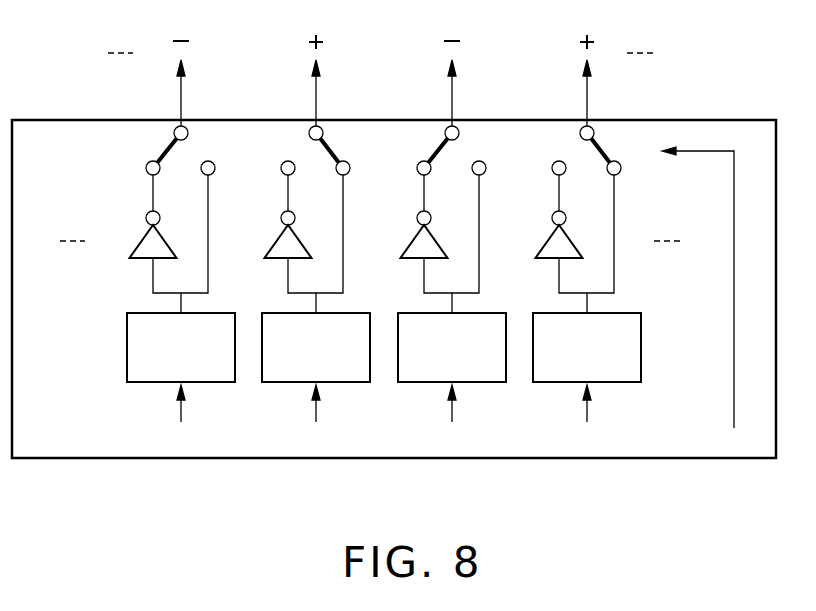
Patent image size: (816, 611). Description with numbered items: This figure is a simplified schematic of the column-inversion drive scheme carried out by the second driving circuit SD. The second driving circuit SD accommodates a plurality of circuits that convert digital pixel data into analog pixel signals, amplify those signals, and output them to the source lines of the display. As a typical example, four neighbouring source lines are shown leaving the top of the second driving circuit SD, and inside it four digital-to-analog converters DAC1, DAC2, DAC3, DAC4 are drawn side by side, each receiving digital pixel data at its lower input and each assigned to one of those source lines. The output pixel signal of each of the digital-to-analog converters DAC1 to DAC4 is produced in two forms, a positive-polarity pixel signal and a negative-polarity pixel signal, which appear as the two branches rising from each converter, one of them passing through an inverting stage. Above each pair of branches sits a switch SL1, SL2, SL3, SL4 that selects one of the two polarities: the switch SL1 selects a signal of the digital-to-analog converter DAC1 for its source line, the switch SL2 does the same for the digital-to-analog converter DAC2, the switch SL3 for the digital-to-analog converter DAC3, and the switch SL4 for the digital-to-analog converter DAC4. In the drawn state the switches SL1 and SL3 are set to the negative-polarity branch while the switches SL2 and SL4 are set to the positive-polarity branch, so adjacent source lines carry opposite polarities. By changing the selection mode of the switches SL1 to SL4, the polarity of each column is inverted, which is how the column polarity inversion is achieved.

The switch SL1 is at (158, 147).
The switch SL2 is at (293, 147).
The switch SL3 is at (429, 147).
The switch SL4 is at (564, 147).
The digital-to-analog converter DAC1 is at (135, 383).
The digital-to-analog converter DAC2 is at (270, 383).
The digital-to-analog converter DAC3 is at (406, 383).
The digital-to-analog converter DAC4 is at (541, 383).
The second driving circuit SD is at (693, 460).